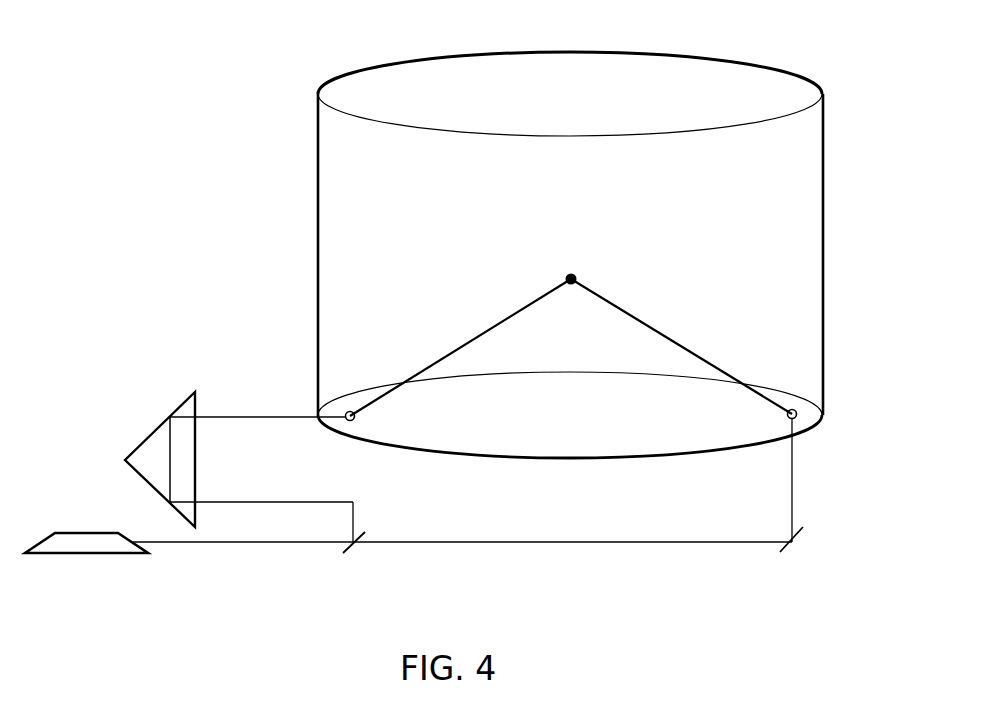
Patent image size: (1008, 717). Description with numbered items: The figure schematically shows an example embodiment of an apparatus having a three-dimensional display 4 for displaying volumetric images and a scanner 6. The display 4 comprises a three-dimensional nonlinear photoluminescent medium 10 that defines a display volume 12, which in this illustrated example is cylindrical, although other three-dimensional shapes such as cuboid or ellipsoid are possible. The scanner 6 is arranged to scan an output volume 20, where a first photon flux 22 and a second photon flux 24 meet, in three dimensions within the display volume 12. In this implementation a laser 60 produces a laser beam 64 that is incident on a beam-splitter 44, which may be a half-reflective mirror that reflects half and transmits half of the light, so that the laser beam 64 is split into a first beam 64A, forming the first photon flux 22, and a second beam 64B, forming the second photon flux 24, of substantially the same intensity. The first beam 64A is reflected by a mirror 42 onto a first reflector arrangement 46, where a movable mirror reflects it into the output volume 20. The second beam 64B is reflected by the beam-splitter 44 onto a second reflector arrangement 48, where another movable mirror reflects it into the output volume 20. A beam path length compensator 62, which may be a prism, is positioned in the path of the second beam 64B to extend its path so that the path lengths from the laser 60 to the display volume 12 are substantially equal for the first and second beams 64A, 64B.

The three-dimensional display 4 is at (562, 242).
The scanner 6 is at (136, 493).
The three-dimensional nonlinear photoluminescent medium 10 is at (340, 94).
The display volume 12 is at (848, 224).
The output volume 20 is at (565, 271).
The first photon flux 22 is at (700, 356).
The second photon flux 24 is at (438, 358).
The mirror 42 is at (793, 545).
The beam-splitter 44 is at (358, 548).
The first reflector arrangement 46 is at (784, 418).
The second reflector arrangement 48 is at (360, 420).
The laser 60 is at (118, 556).
The beam path length compensator 62 is at (197, 490).
The laser beam 64 is at (240, 545).
The first beam 64A is at (636, 320).
The second beam 64B is at (500, 319).